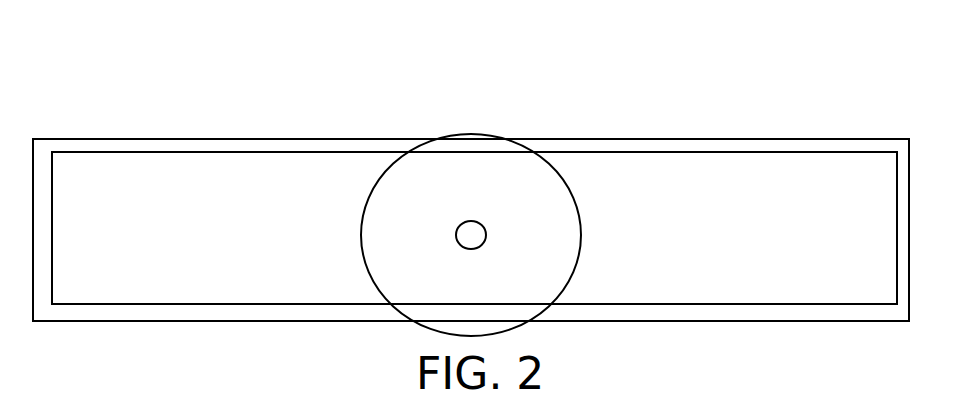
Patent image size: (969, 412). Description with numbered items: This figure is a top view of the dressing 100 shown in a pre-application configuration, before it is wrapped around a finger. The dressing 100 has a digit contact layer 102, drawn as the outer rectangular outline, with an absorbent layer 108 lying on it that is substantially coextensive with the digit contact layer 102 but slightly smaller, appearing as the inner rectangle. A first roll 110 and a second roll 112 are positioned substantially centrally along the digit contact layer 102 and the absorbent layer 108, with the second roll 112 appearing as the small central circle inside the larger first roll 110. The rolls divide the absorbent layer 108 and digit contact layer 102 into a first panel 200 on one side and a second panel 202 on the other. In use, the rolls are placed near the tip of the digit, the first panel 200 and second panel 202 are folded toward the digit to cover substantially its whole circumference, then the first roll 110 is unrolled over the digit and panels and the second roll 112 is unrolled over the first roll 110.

The dressing 100 is at (114, 52).
The digit contact layer 102 is at (122, 143).
The absorbent layer 108 is at (243, 160).
The first roll 110 is at (487, 108).
The second roll 112 is at (462, 148).
The first panel 200 is at (240, 358).
The second panel 202 is at (742, 358).